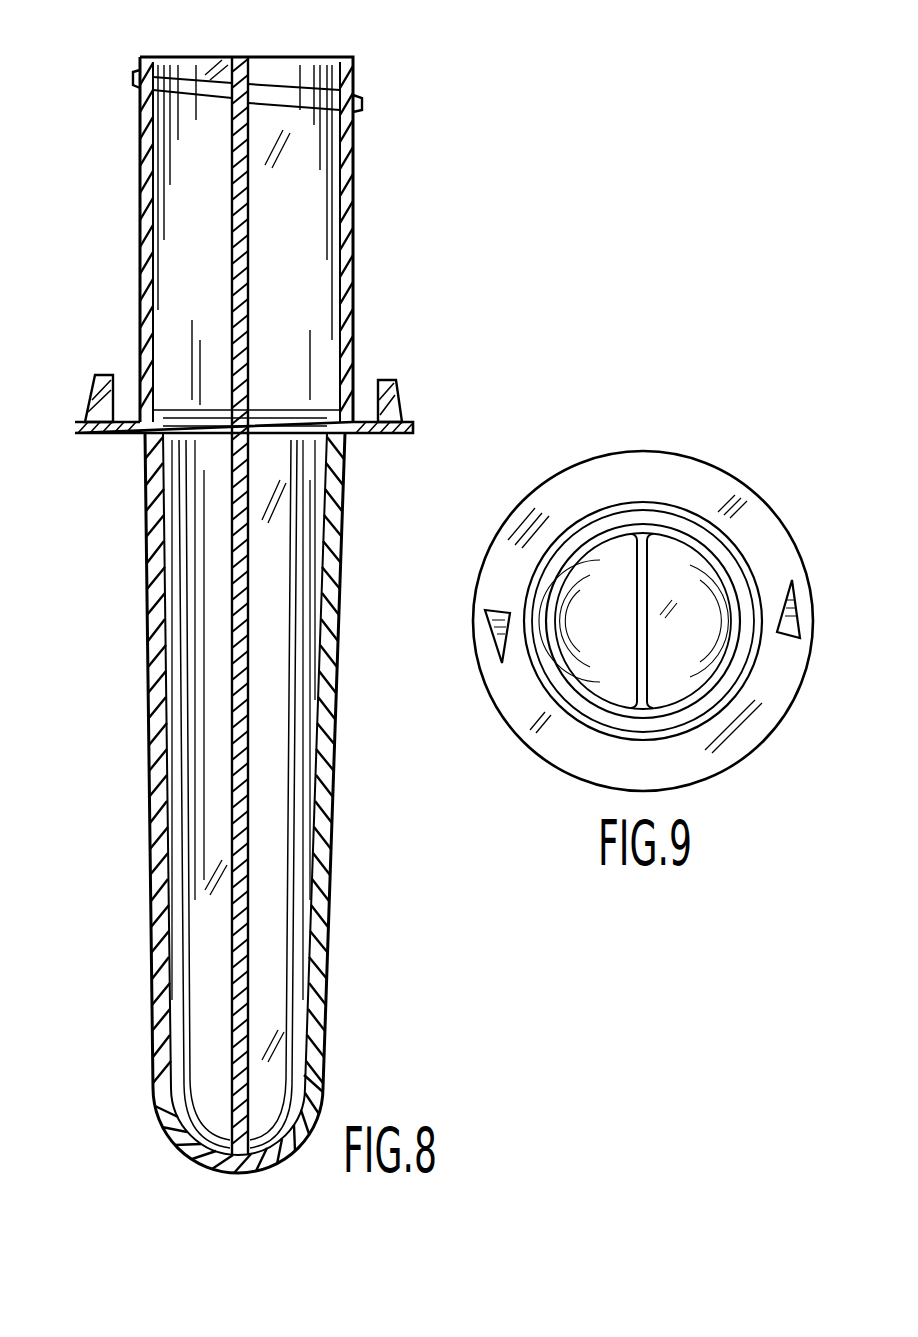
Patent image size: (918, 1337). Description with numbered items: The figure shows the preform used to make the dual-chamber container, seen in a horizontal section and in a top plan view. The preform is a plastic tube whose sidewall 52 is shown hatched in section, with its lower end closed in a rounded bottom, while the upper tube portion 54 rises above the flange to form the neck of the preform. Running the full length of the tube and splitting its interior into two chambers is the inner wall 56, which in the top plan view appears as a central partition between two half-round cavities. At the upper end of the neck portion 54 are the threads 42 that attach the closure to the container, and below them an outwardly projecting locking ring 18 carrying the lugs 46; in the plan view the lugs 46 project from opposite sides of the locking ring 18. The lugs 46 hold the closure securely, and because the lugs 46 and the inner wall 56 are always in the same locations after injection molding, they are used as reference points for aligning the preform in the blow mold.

In FIG. 8, the locking ring 18 is at (104, 434).
In FIG. 9, the locking ring 18 is at (758, 735).
In FIG. 8, the threads 42 is at (363, 103).
In FIG. 8, the lugs 46 is at (92, 395).
In FIG. 9, the lugs 46 is at (487, 648).
In FIG. 8, the sidewall 52 is at (330, 845).
In FIG. 8, the upper tube portion 54 is at (353, 226).
In FIG. 8, the inner wall 56 is at (231, 692).
In FIG. 9, the inner wall 56 is at (655, 550).